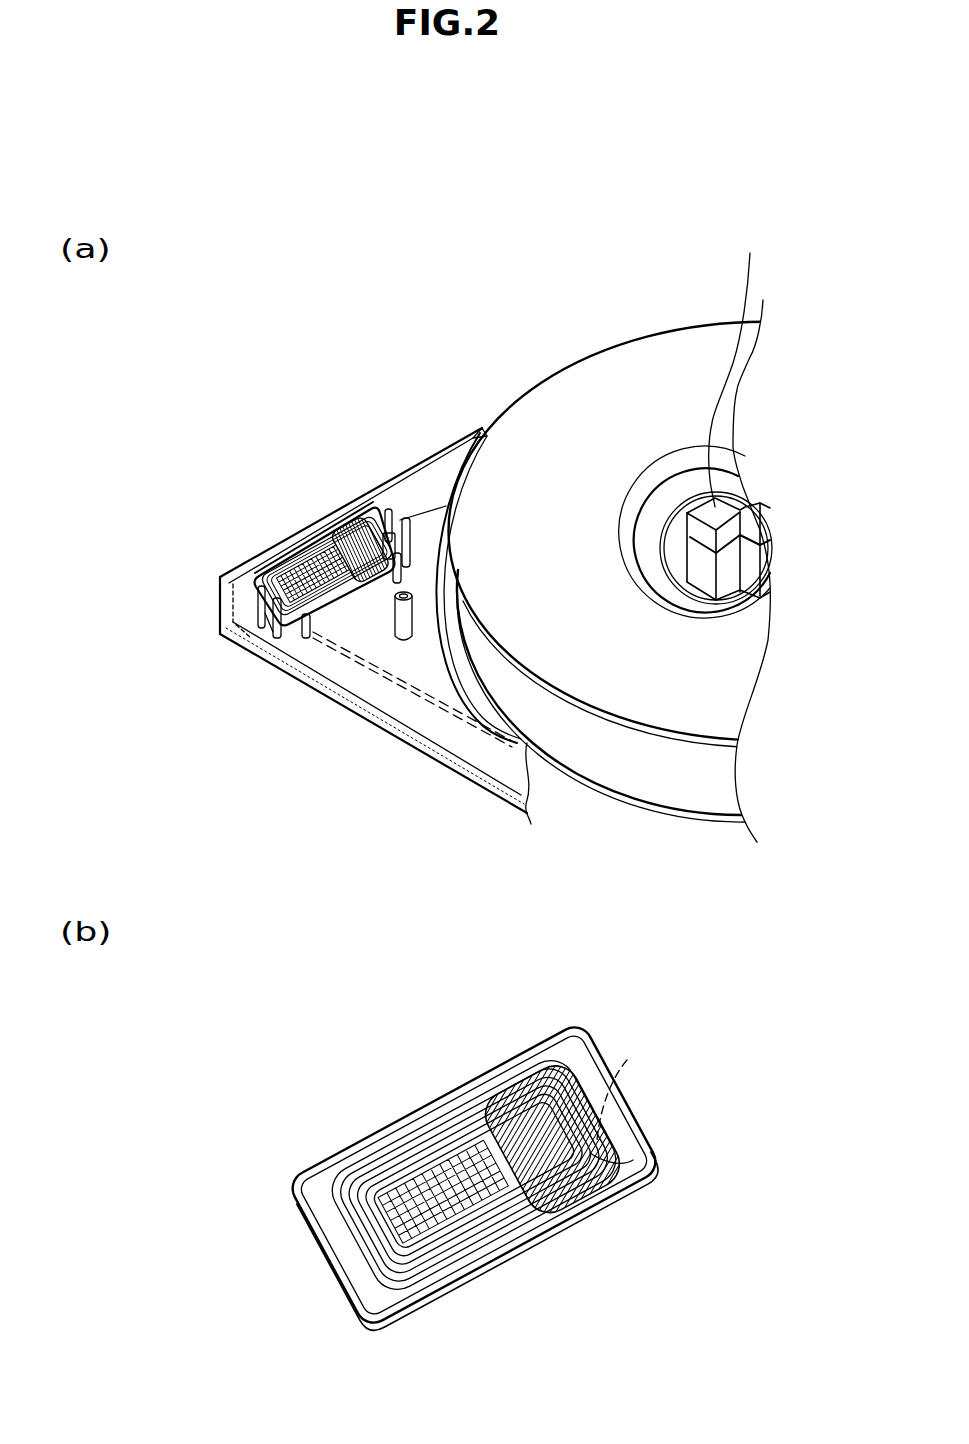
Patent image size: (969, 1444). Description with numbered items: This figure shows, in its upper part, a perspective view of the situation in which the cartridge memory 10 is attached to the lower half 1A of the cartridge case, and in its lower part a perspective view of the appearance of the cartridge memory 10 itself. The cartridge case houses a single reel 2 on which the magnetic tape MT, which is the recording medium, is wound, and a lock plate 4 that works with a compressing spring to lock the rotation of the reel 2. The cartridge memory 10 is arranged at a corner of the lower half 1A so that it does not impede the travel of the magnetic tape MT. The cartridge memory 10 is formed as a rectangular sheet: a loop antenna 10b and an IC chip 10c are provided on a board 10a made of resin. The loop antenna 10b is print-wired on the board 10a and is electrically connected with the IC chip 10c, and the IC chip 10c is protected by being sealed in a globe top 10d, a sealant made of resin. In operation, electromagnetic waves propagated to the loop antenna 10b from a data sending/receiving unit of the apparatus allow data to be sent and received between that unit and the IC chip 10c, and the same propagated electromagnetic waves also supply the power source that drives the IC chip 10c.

The lower half 1A is at (433, 441).
The reel 2 is at (626, 339).
The lock plate 4 is at (740, 530).
The cartridge memory 10 is at (334, 533).
The board 10a is at (351, 1172).
The loop antenna 10b is at (452, 1138).
The IC chip 10c is at (627, 1060).
The globe top 10d is at (633, 1160).
The magnetic tape MT is at (603, 753).